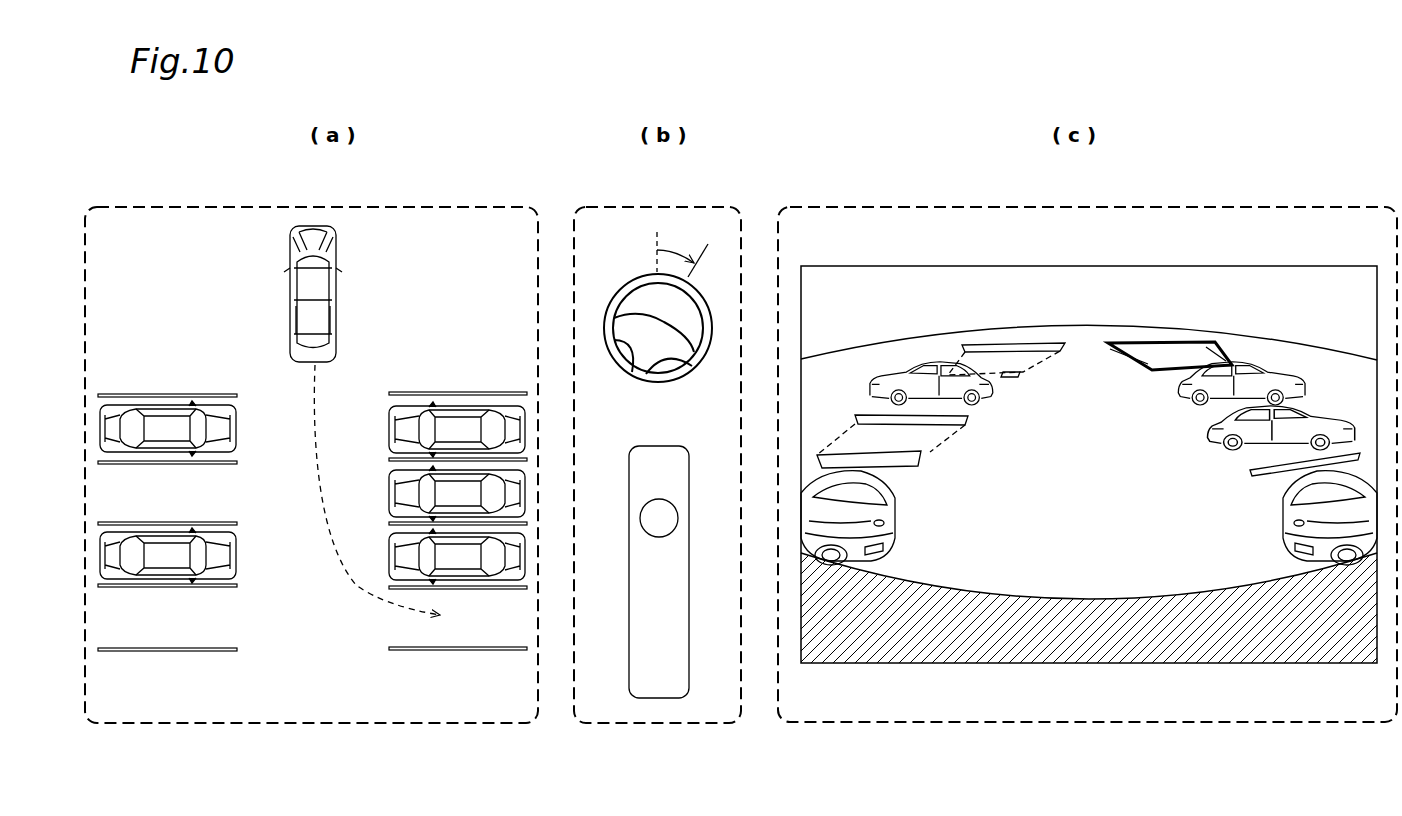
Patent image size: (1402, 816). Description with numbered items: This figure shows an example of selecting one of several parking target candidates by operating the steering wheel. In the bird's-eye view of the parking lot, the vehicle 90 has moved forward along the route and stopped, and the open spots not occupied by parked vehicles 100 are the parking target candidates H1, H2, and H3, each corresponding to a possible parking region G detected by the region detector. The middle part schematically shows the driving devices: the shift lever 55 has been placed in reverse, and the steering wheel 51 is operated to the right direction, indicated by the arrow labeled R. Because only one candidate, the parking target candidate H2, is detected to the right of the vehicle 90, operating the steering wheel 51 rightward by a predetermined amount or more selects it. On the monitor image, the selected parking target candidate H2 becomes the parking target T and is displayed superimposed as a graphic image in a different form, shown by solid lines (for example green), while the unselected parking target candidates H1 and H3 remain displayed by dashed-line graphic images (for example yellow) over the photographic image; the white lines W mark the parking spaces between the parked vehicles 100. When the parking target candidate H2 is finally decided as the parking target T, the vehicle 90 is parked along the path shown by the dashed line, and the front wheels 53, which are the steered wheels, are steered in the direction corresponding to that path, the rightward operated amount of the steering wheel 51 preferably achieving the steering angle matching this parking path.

The front wheels 53 is at (286, 252).
The vehicle 90 is at (336, 352).
The steering wheel 51 is at (657, 383).
The shift lever 55 is at (629, 648).
The parked vehicles 100 is at (1265, 362).
The parking target candidate H1 is at (196, 621).
The parking target candidate H2 is at (447, 623).
The parking target candidate H3 is at (212, 499).
The white line W is at (1012, 343).
The parking target T is at (1150, 366).
The possible parking region G is at (967, 360).